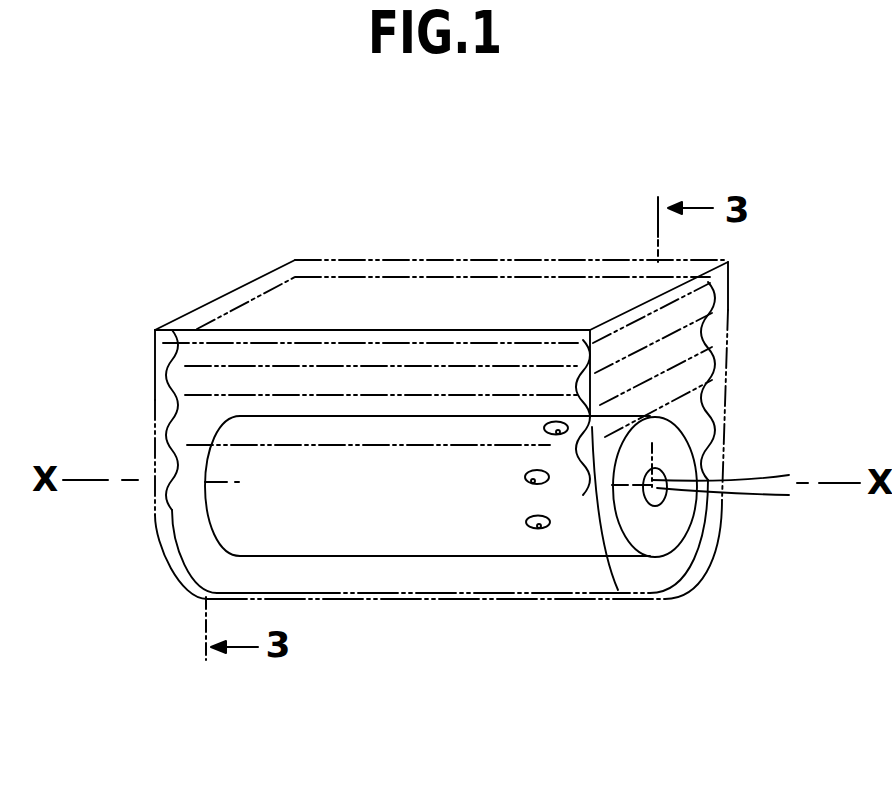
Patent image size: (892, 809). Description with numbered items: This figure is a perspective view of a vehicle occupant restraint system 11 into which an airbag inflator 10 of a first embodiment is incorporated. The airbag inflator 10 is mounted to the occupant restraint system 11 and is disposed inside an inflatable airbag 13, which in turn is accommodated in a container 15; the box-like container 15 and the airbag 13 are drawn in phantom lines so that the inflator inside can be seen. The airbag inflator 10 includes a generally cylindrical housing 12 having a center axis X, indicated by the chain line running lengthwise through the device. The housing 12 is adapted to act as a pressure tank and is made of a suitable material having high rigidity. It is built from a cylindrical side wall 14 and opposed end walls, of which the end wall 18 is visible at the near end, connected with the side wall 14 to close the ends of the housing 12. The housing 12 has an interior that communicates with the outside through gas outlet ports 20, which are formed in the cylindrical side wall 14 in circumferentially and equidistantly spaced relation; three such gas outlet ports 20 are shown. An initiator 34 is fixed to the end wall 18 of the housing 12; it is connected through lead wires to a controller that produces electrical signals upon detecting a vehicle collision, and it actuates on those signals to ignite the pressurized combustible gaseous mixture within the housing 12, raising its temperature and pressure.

The airbag inflator 10 is at (447, 240).
The occupant restraint system 11 is at (331, 258).
The housing 12 is at (384, 558).
The inflatable airbag 13 is at (570, 280).
The cylindrical side wall 14 is at (428, 538).
The container 15 is at (202, 307).
The end wall 18 is at (657, 538).
The gas outlet port 20 is at (528, 483).
The initiator 34 is at (667, 512).